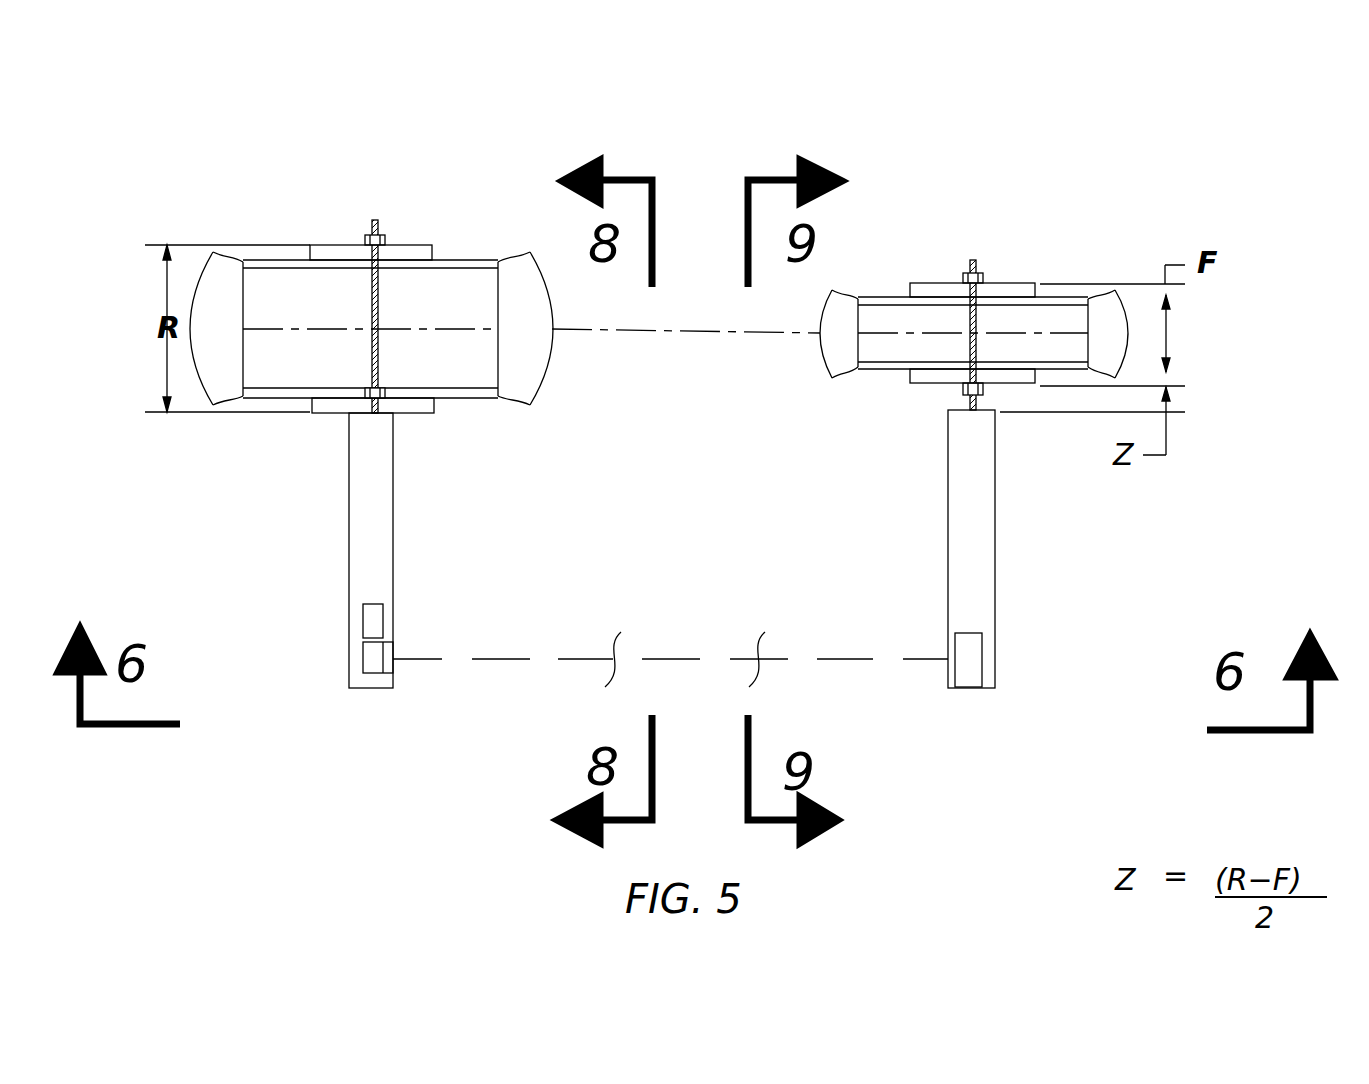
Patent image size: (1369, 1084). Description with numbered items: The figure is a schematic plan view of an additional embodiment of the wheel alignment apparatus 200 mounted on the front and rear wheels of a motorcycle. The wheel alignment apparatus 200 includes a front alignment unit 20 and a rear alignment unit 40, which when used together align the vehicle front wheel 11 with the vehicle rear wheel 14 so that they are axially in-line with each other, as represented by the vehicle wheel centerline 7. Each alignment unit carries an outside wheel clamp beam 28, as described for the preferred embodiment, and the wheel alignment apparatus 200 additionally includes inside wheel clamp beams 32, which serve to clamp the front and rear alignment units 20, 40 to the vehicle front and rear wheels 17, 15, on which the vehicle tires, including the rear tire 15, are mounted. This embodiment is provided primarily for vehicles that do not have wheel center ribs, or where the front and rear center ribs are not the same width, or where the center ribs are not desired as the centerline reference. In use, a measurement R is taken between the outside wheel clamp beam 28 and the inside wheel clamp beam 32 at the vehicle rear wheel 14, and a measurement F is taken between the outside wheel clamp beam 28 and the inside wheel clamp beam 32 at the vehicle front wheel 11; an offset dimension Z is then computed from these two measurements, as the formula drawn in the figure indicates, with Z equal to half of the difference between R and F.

The wheel alignment apparatus 200 is at (278, 130).
The rear alignment unit 40 is at (272, 538).
The front alignment unit 20 is at (1097, 546).
The vehicle rear wheel 14 is at (483, 263).
The vehicle front wheel 11 is at (870, 297).
The vehicle rear tire 15 is at (528, 405).
The vehicle front wheel 17 is at (830, 373).
The vehicle wheel centerline 7 is at (735, 330).
The outside wheel clamp beam 28 is at (333, 246).
The inside wheel clamp beam 32 is at (405, 413).